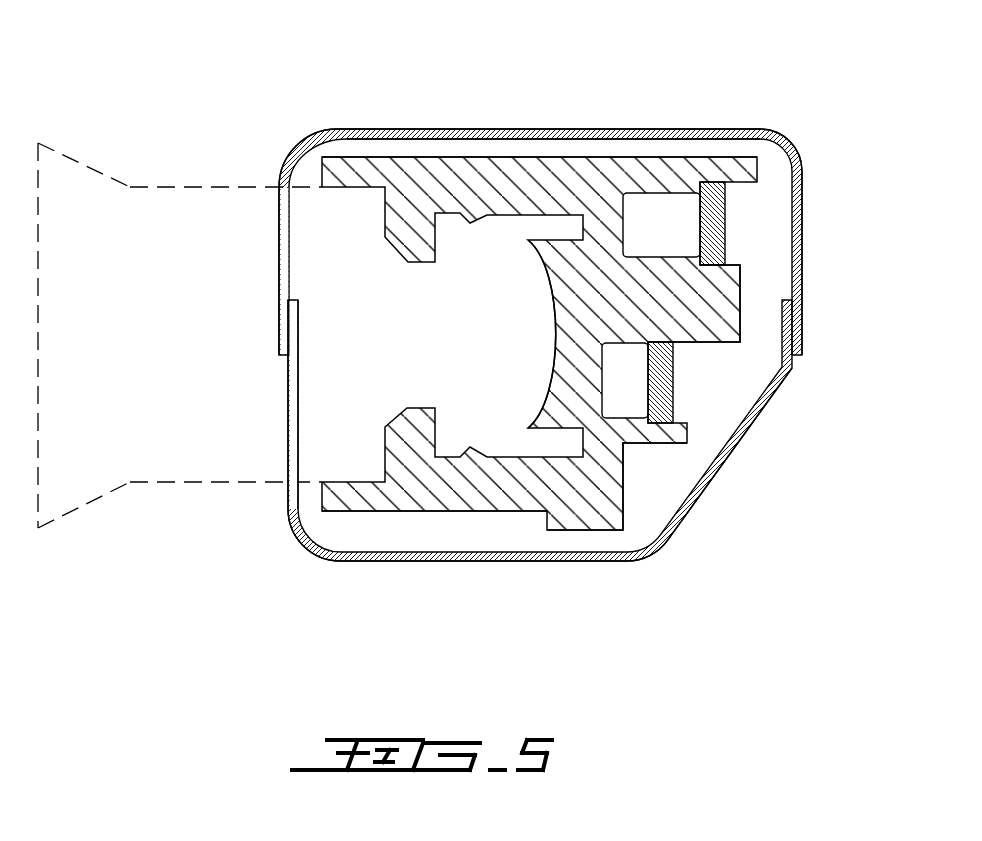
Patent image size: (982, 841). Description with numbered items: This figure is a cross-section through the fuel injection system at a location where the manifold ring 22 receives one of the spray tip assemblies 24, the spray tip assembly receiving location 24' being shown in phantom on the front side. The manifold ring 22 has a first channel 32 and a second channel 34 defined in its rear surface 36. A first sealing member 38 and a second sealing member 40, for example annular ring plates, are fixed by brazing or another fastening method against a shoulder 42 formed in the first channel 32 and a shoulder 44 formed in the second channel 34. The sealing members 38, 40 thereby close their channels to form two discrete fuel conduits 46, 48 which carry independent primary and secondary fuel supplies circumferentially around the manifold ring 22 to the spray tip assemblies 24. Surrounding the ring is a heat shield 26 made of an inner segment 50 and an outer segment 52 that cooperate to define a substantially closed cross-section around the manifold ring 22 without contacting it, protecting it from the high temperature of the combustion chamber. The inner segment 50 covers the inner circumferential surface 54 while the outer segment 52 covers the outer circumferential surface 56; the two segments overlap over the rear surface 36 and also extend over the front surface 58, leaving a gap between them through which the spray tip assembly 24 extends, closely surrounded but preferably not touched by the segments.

The manifold ring 22 is at (347, 156).
The spray tip assembly 24 is at (180, 296).
The spray tip assembly receiving location 24' is at (376, 399).
The heat shield 26 is at (750, 125).
The first channel 32 is at (623, 174).
The second channel 34 is at (636, 388).
The rear surface 36 is at (740, 297).
The first sealing member 38 is at (712, 223).
The second sealing member 40 is at (675, 383).
The shoulder 42 is at (728, 192).
The shoulder 44 is at (675, 342).
The first fuel conduit 46 is at (670, 225).
The second fuel conduit 48 is at (620, 425).
The inner segment 50 is at (417, 561).
The outer segment 52 is at (500, 129).
The inner circumferential surface 54 is at (505, 511).
The outer circumferential surface 56 is at (410, 155).
The front surface 58 is at (303, 505).